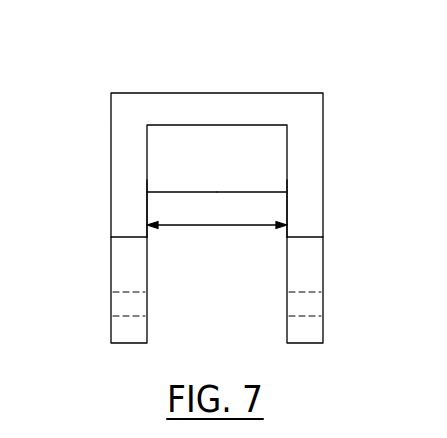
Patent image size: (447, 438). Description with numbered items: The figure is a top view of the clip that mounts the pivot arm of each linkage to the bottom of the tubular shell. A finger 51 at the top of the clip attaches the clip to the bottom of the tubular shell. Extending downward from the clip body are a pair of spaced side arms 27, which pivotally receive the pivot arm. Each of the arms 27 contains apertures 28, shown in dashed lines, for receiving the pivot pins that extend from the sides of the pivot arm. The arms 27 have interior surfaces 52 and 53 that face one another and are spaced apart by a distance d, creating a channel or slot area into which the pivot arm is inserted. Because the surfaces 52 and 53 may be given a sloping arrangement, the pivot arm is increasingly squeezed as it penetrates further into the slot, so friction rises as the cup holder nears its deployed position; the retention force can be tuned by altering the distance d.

The finger 51 is at (185, 93).
The interior surface 52 is at (147, 203).
The interior surface 53 is at (287, 203).
The arms 27 is at (111, 272).
The apertures 28 is at (111, 316).
The distance d is at (235, 228).